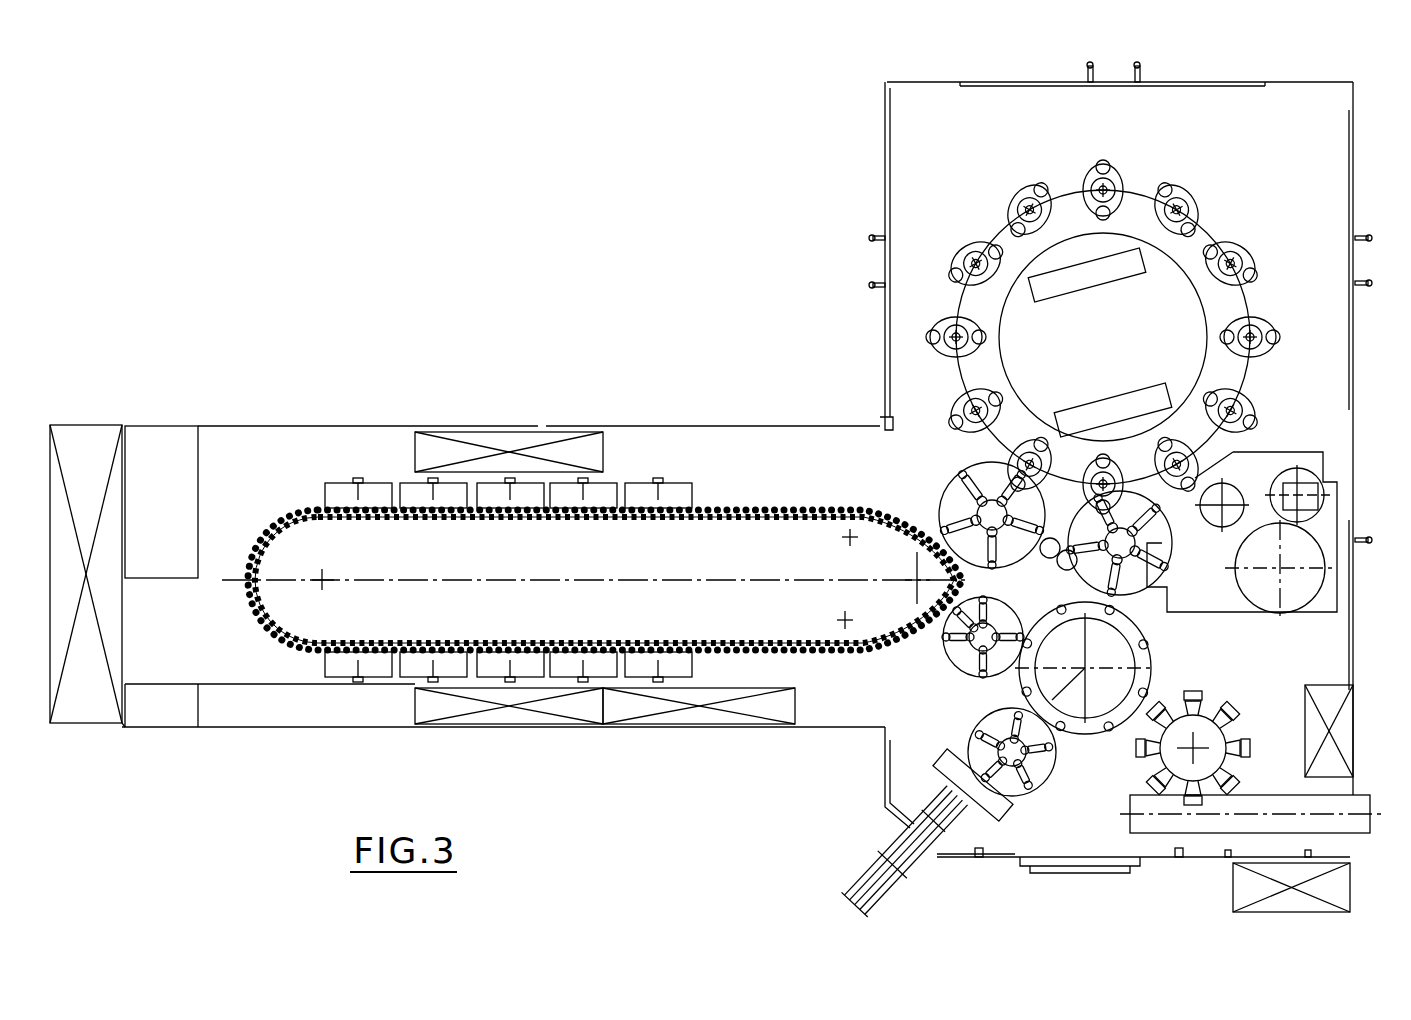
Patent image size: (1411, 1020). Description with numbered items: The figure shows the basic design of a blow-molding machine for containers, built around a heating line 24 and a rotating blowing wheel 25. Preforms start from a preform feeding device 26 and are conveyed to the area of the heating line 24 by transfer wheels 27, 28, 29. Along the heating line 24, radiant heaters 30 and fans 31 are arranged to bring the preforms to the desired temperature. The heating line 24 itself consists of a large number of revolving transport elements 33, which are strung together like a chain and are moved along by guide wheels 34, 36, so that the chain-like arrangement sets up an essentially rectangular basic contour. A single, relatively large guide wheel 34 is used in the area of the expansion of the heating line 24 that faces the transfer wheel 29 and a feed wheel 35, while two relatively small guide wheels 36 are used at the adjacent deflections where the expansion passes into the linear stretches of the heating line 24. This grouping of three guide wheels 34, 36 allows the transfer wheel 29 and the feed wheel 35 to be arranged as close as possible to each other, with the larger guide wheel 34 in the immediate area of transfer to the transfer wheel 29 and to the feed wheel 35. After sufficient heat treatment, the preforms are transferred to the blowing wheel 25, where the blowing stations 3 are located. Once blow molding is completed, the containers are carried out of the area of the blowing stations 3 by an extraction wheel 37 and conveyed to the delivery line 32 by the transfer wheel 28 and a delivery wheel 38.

The blowing station 3 is at (933, 323).
The heating line 24 is at (645, 462).
The blowing wheel 25 is at (1022, 250).
The preform feeding device 26 is at (917, 867).
The transfer wheel 27 is at (1025, 797).
The transfer wheel 28 is at (1083, 730).
The transfer wheel 29 is at (958, 657).
The radiant heater 30 is at (377, 485).
The fan 31 is at (503, 440).
The delivery line 32 is at (1358, 822).
The transport element 33 is at (290, 642).
The guide wheel 34 is at (322, 582).
The feed wheel 35 is at (966, 471).
The guide wheel 36 is at (836, 527).
The extraction wheel 37 is at (1173, 572).
The delivery wheel 38 is at (1203, 762).